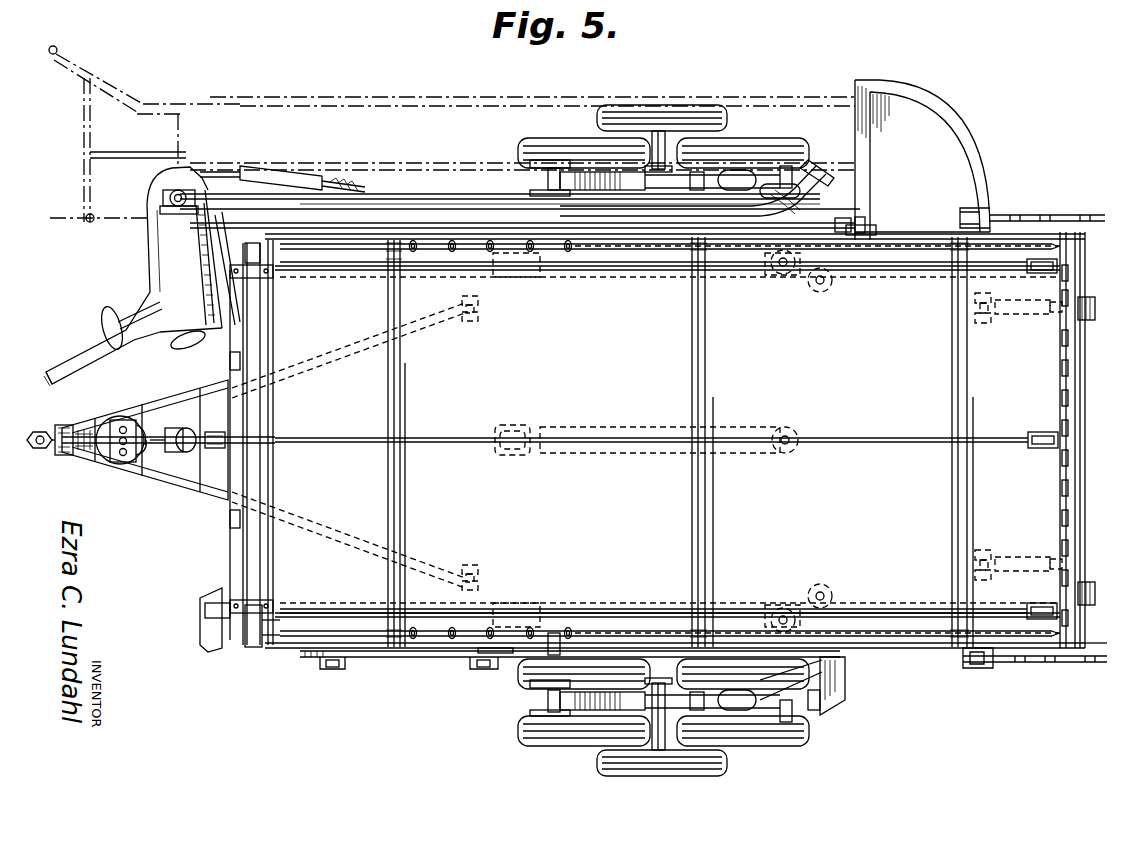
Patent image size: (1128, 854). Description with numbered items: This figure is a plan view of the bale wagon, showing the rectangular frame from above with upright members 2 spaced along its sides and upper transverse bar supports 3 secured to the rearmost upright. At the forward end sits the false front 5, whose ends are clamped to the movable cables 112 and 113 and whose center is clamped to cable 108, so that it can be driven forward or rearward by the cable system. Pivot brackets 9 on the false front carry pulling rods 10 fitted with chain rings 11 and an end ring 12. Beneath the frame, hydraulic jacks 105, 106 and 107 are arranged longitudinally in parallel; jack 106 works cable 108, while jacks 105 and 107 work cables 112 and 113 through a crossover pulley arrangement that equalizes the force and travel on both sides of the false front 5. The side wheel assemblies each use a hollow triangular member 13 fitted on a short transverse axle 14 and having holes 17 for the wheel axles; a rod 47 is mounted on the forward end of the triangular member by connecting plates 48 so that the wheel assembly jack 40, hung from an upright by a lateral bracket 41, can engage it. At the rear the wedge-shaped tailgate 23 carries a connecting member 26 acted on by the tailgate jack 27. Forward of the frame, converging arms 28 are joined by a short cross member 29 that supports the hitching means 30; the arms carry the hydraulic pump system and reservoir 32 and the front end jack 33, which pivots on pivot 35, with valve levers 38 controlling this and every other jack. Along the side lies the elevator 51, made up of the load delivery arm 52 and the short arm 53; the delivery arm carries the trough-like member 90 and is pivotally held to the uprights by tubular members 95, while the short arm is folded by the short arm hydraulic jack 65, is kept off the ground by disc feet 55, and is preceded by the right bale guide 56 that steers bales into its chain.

The upright member 2 is at (343, 670).
The upper transverse bar support 3 is at (1050, 215).
The false front 5 is at (228, 548).
The pivot bracket 9 is at (262, 647).
The pulling rod 10 is at (997, 244).
The chain ring 11 is at (448, 640).
The end ring 12 is at (1100, 641).
The triangular member 13 is at (602, 175).
The short transverse axle 14 is at (695, 160).
The hole 17 is at (528, 138).
The tailgate 23 is at (1073, 510).
The connecting member 26 is at (1090, 320).
The tailgate jack 27 is at (1010, 316).
The converging arm 28 is at (335, 358).
The cross member 29 is at (62, 430).
The hitching means 30 is at (38, 432).
The hydraulic pump system and reservoir 32 is at (110, 462).
The front end jack 33 is at (175, 455).
The pivot 35 is at (466, 325).
The valve lever 38 is at (126, 462).
The wheel assembly jack 40 is at (775, 175).
The lateral bracket 41 is at (845, 690).
The rod 47 is at (556, 180).
The connecting plate 48 is at (545, 150).
The elevator 51 is at (456, 88).
The load delivery arm 52 is at (878, 194).
The short arm 53 is at (147, 243).
The disc foot 55 is at (105, 333).
The right bale guide 56 is at (112, 368).
The short arm hydraulic jack 65 is at (266, 180).
The trough-like member 90 is at (446, 195).
The tubular member 95 is at (858, 224).
The hydraulic jack 105 is at (656, 603).
The hydraulic jack 106 is at (648, 428).
The hydraulic jack 107 is at (643, 275).
The cable 108 is at (863, 437).
The cable 112 is at (325, 272).
The cable 113 is at (305, 612).